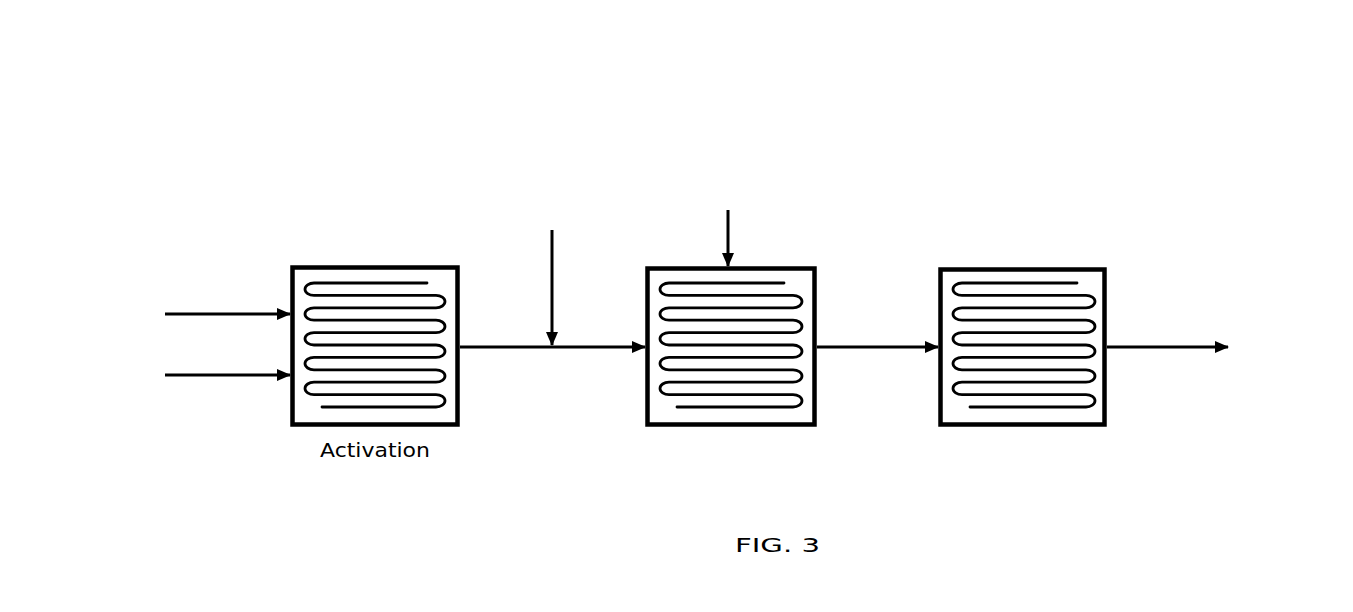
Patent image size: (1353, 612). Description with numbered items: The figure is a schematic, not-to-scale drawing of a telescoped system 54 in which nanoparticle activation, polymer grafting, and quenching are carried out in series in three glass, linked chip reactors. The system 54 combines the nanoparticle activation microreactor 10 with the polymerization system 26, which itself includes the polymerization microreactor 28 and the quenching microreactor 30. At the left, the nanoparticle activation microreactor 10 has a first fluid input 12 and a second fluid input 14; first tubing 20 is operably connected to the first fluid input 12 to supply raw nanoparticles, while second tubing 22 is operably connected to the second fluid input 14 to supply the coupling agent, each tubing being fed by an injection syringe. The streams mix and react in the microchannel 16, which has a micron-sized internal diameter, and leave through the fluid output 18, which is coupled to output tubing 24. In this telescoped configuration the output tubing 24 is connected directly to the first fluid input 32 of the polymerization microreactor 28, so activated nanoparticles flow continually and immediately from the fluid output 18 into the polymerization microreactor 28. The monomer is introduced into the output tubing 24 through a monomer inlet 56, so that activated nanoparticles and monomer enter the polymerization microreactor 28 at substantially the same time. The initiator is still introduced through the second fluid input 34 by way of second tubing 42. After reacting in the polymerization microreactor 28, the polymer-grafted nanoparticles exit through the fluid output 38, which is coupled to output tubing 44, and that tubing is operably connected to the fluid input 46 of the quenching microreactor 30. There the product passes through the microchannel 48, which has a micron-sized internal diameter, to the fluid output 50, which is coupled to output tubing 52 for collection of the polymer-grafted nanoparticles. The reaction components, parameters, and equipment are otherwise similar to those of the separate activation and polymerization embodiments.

The nanoparticle activation microreactor 10 is at (373, 225).
The first fluid input 12 is at (277, 296).
The second fluid input 14 is at (276, 403).
The microchannel 16 is at (404, 278).
The fluid output 18 is at (470, 330).
The first tubing 20 is at (155, 300).
The second tubing 22 is at (155, 365).
The output tubing 24 is at (608, 322).
The polymerization system 26 is at (889, 165).
The polymerization microreactor 28 is at (652, 473).
The quenching microreactor 30 is at (1060, 218).
The first fluid input 32 is at (632, 365).
The second fluid input 34 is at (716, 252).
The fluid output 38 is at (828, 355).
The second tubing 42 is at (750, 220).
The output tubing 44 is at (872, 358).
The fluid input 46 is at (932, 357).
The microchannel 48 is at (990, 283).
The fluid output 50 is at (1123, 357).
The output tubing 52 is at (1200, 367).
The telescoped system 54 is at (731, 115).
The monomer inlet 56 is at (570, 302).